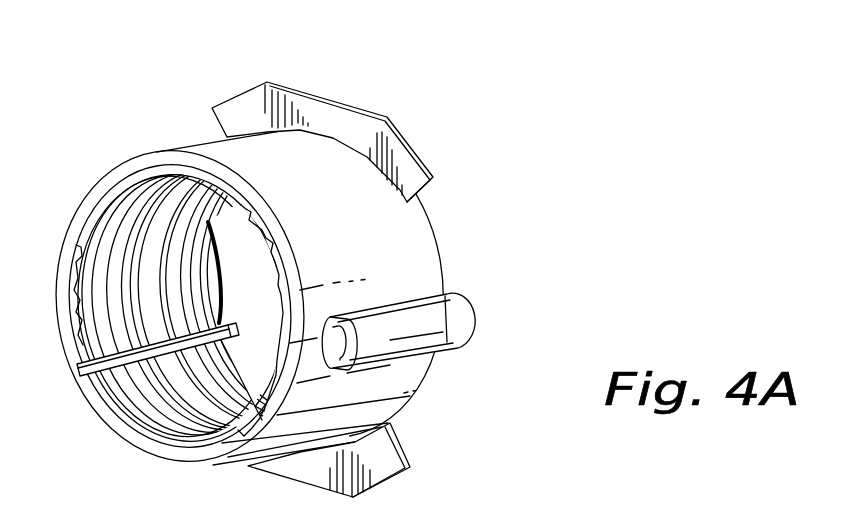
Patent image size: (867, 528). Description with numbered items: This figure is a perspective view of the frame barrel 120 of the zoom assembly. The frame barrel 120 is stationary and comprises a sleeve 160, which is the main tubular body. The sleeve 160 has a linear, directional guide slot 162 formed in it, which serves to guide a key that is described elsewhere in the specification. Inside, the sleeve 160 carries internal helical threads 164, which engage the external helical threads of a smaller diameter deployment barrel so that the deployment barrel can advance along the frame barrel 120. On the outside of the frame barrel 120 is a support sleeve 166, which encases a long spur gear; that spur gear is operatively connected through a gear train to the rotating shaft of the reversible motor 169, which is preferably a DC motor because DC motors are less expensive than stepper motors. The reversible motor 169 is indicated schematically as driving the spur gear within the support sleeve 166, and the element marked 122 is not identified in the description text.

The frame barrel 120 is at (356, 90).
The front flange ring 122 is at (205, 461).
The sleeve 160 is at (215, 150).
The guide slot 162 is at (85, 376).
The internal helical threads 164 is at (103, 273).
The support sleeve 166 is at (433, 325).
The reversible motor 169 is at (468, 316).